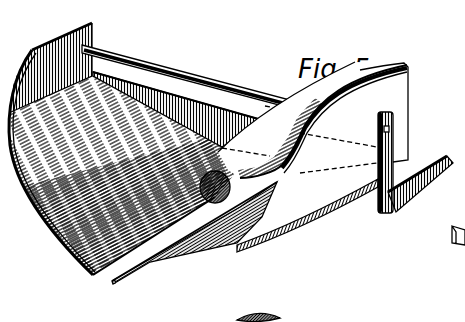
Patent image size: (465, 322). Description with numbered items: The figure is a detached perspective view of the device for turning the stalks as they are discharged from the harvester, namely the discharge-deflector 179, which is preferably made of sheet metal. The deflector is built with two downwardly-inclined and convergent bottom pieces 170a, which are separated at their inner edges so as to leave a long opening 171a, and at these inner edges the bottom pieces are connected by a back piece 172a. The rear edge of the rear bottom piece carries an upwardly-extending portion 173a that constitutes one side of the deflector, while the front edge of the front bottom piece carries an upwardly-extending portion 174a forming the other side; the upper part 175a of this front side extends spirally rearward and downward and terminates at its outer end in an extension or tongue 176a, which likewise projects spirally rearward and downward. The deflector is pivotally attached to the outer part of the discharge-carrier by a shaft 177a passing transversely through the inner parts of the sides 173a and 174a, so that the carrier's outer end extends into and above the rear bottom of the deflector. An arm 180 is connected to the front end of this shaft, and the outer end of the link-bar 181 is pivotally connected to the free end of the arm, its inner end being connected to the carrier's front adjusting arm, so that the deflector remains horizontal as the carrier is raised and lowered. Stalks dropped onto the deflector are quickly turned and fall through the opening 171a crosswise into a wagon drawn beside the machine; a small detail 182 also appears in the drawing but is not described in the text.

The bottom pieces 170a is at (150, 185).
The opening 171a is at (103, 276).
The back piece 172a is at (177, 109).
The upwardly-extending portion 173a is at (40, 46).
The upwardly-extending portion 174a is at (307, 213).
The upper part 175a is at (313, 126).
The extension or tongue 176a is at (196, 181).
The shaft 177a is at (247, 88).
The discharge-deflector 179 is at (222, 58).
The arm 180 is at (391, 150).
The link-bar 181 is at (422, 185).
The fastening piece 182 is at (458, 248).